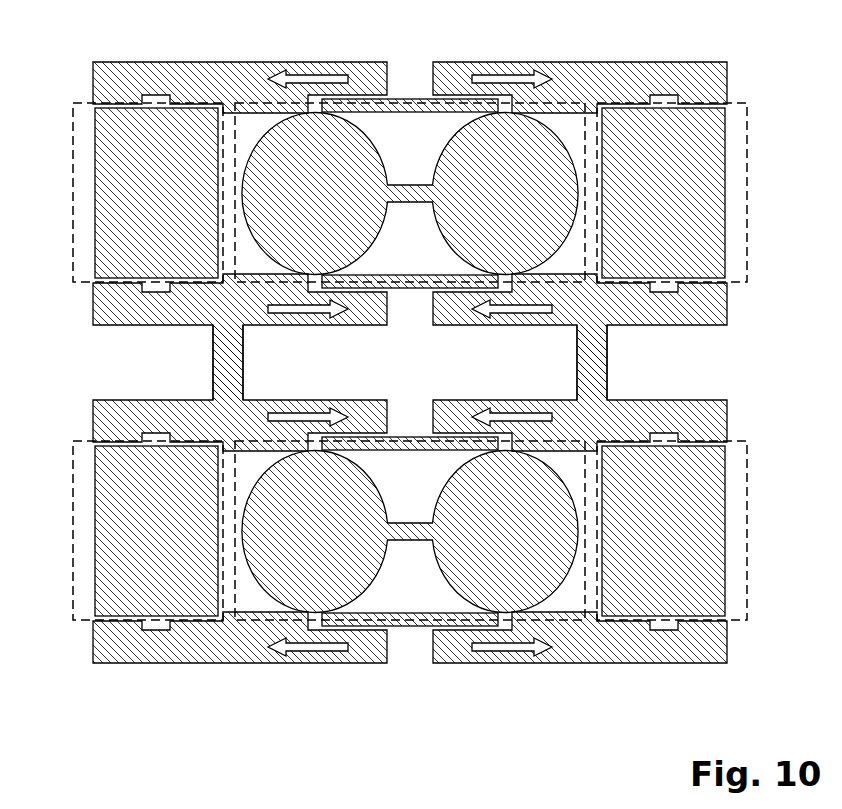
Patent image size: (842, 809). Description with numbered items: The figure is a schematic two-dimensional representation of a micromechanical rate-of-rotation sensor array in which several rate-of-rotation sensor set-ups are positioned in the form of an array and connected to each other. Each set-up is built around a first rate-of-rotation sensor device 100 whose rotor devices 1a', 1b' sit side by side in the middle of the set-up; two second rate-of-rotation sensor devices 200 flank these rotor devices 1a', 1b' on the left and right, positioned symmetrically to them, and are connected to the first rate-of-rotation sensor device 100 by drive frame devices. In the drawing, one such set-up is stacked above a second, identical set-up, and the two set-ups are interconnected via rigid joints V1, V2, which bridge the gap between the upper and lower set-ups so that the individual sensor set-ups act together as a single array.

The first rate-of-rotation sensor device 100 is at (406, 98).
The second rate-of-rotation sensor device 200 is at (73, 194).
The rotor device 1a' is at (330, 363).
The rotor device 1b' is at (482, 363).
The rigid joint V1 is at (230, 362).
The rigid joint V2 is at (590, 362).